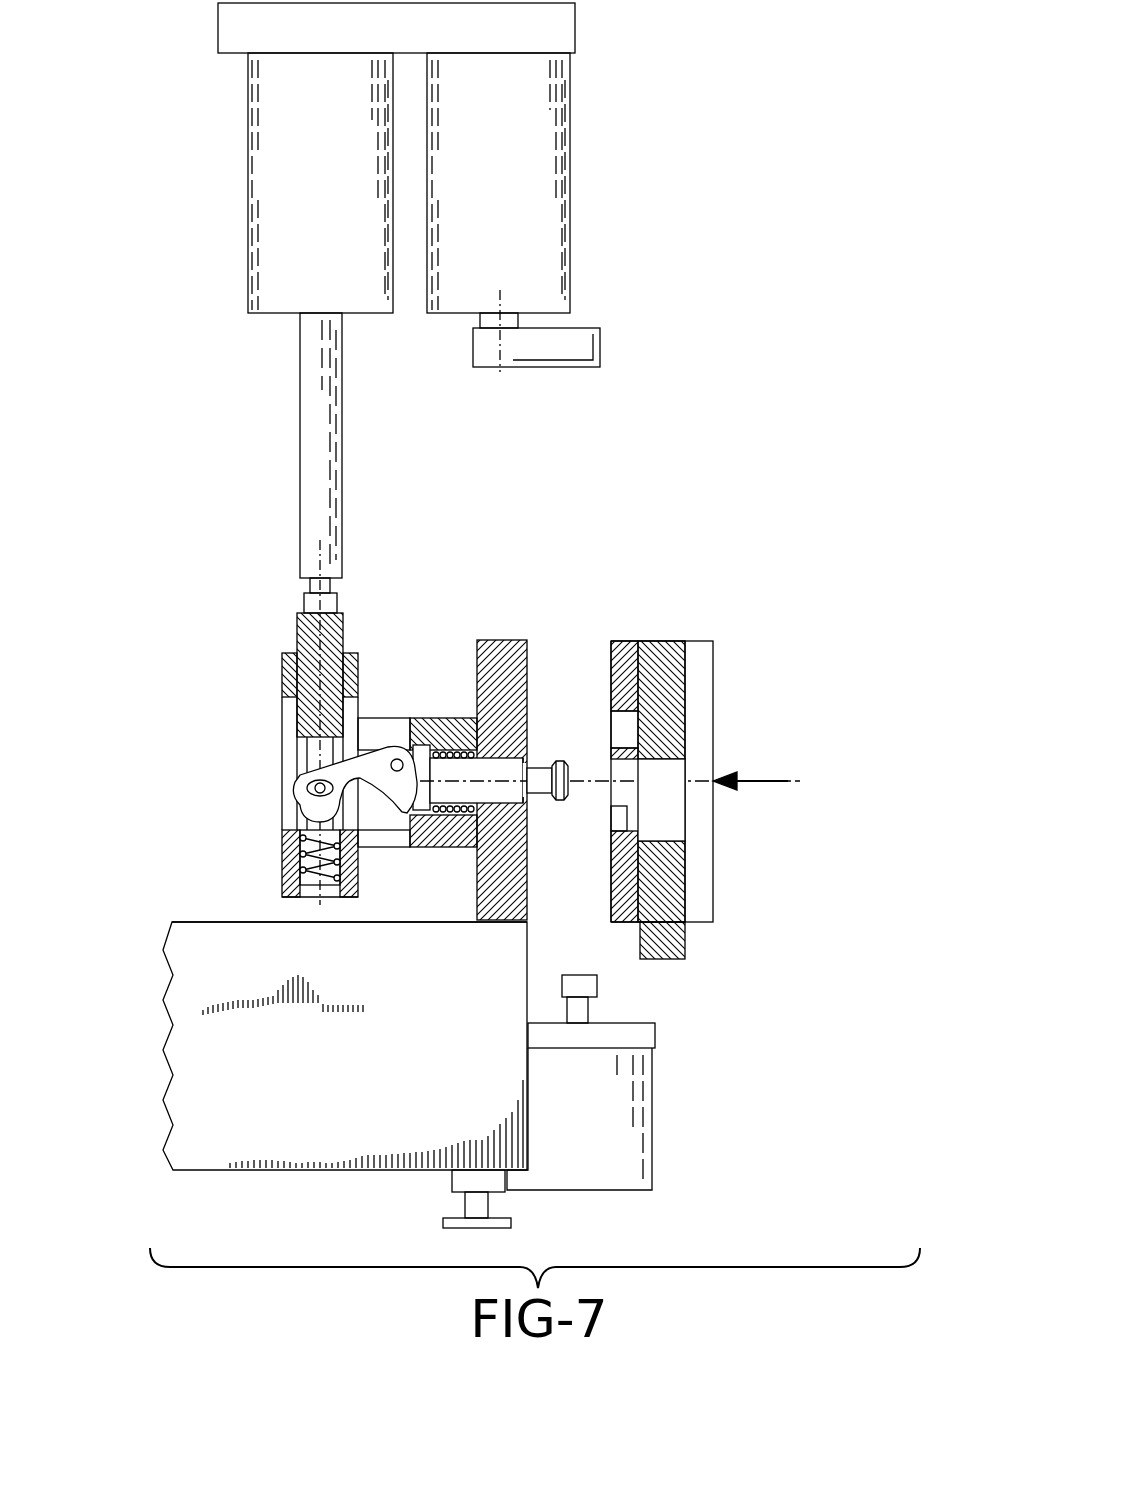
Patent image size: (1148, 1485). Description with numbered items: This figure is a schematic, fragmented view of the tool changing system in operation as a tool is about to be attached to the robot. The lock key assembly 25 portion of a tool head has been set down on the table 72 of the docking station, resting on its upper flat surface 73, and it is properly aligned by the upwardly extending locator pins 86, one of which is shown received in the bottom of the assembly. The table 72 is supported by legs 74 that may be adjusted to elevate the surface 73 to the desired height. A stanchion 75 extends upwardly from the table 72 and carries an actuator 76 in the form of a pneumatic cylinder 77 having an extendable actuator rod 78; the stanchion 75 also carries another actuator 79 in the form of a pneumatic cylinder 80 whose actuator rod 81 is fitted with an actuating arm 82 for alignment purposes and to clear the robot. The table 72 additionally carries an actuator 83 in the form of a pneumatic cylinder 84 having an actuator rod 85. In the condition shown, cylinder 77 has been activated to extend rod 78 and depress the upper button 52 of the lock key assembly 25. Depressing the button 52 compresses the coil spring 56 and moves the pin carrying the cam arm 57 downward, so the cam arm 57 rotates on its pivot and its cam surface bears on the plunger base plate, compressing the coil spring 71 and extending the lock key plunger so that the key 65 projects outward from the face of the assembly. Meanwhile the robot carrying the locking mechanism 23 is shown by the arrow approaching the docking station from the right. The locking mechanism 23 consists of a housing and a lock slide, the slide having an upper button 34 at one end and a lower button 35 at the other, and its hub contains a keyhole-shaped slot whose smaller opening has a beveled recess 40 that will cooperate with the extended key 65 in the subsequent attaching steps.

The stanchion 75 is at (248, 17).
The actuator 76 is at (246, 133).
The pneumatic cylinder 77 is at (280, 220).
The actuator 79 is at (572, 133).
The pneumatic cylinder 80 is at (537, 216).
The actuator rod 81 is at (482, 318).
The actuating arm 82 is at (560, 340).
The actuator rod 78 is at (315, 480).
The upper button 52 is at (300, 633).
The lock key assembly 25 is at (419, 648).
The cam arm 57 is at (392, 745).
The coil spring 71 is at (455, 755).
The key 65 is at (562, 756).
The locking mechanism 23 is at (714, 638).
The upper button 34 is at (665, 660).
The beveled recess 40 is at (633, 820).
The coil spring 56 is at (300, 862).
The locator pins 86 is at (477, 892).
The lower button 35 is at (674, 947).
The upper flat surface 73 is at (205, 922).
The table 72 is at (210, 1058).
The actuator rod 85 is at (577, 1012).
The pneumatic cylinder 84 is at (612, 1118).
The actuator 83 is at (652, 1160).
The legs 74 is at (478, 1200).